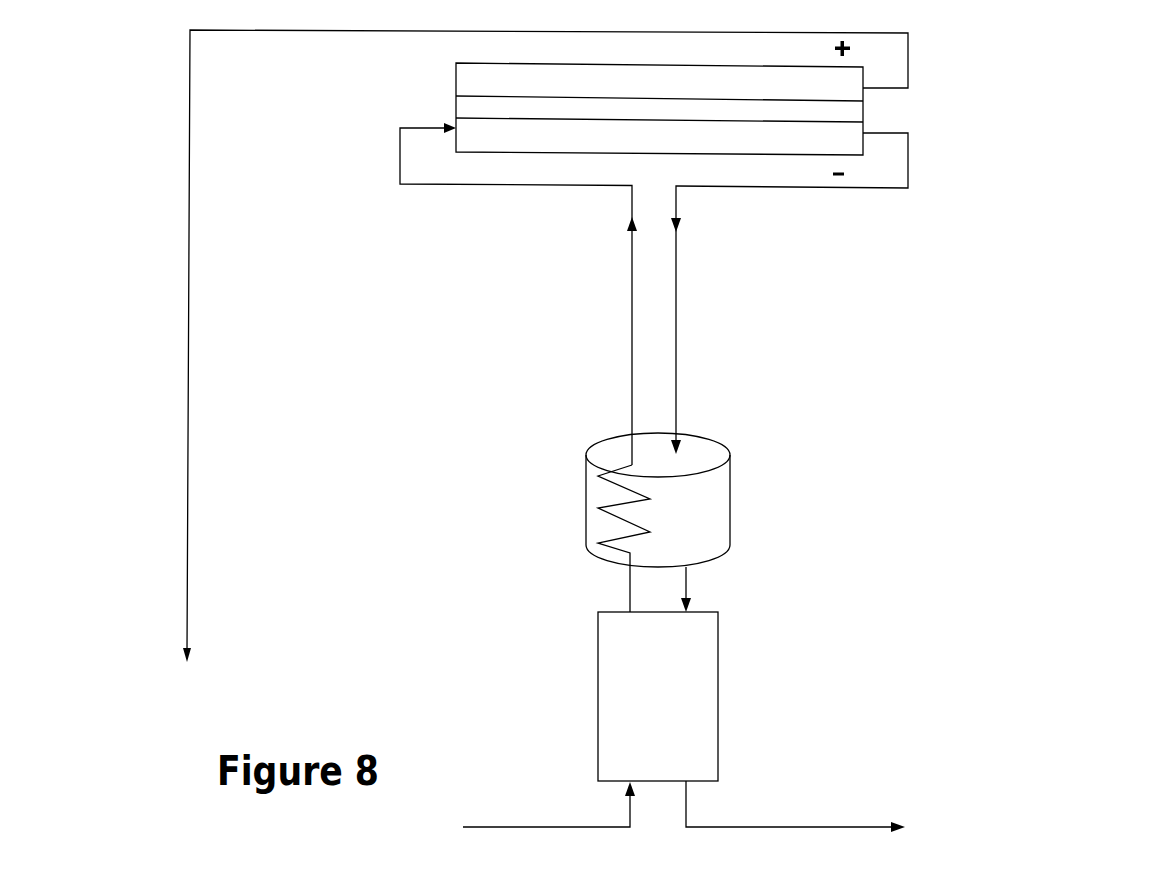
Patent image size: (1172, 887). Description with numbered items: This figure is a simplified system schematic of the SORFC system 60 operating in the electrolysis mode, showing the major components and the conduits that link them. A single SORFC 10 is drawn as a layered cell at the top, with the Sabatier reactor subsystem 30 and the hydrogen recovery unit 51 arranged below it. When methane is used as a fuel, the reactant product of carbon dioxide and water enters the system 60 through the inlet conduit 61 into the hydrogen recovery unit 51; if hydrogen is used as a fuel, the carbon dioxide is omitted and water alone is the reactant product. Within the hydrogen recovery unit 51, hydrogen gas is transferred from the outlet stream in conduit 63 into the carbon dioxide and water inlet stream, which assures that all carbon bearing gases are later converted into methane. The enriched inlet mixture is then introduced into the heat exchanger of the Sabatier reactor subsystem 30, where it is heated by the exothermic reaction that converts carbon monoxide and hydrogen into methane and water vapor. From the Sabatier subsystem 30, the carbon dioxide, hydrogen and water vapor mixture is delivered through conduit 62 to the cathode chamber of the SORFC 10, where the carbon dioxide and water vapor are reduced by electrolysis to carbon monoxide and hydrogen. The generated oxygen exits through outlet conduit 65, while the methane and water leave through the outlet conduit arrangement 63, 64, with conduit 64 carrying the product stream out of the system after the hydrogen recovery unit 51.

The SORFC 10 is at (830, 108).
The Sabatier reactor subsystem 30 is at (685, 510).
The hydrogen recovery unit 51 is at (697, 699).
The SORFC system 60 is at (673, 431).
The inlet conduit 61 is at (530, 827).
The conduit 62 is at (500, 185).
The outlet conduit 63 is at (853, 188).
The outlet conduit 64 is at (807, 827).
The outlet conduit 65 is at (188, 407).